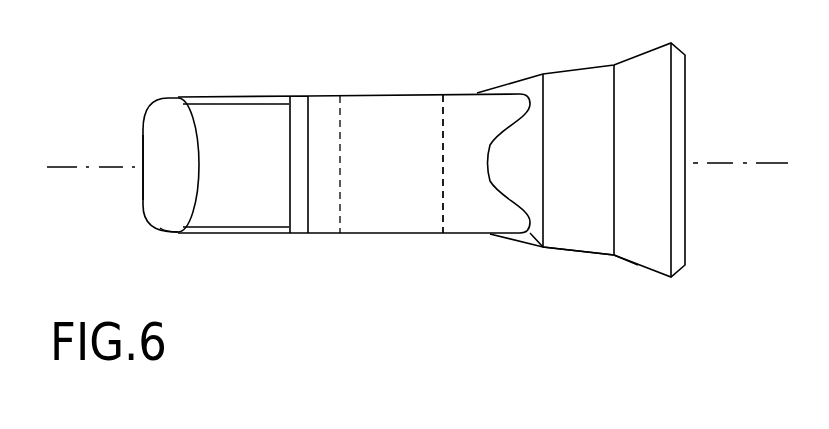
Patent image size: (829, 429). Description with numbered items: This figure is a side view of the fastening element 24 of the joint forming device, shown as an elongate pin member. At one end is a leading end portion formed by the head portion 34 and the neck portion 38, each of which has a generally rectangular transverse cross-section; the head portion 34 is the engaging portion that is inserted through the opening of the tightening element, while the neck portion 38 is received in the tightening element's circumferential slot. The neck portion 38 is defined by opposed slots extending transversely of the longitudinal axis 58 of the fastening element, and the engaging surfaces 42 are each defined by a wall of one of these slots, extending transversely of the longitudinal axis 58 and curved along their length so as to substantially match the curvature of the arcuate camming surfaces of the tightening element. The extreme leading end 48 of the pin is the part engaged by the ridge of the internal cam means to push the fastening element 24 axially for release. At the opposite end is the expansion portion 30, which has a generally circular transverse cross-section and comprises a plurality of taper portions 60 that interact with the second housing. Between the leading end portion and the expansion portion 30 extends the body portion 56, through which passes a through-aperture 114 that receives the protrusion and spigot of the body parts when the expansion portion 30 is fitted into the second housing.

The fastening element 24 is at (312, 290).
The expansion portion 30 is at (570, 97).
The head portion 34 is at (163, 123).
The neck portion 38 is at (258, 133).
The engaging surfaces 42 is at (178, 228).
The leading end 48 is at (142, 136).
The body portion 56 is at (395, 95).
The longitudinal axis 58 is at (110, 167).
The taper portions 60 is at (528, 238).
The through-aperture 114 is at (423, 188).